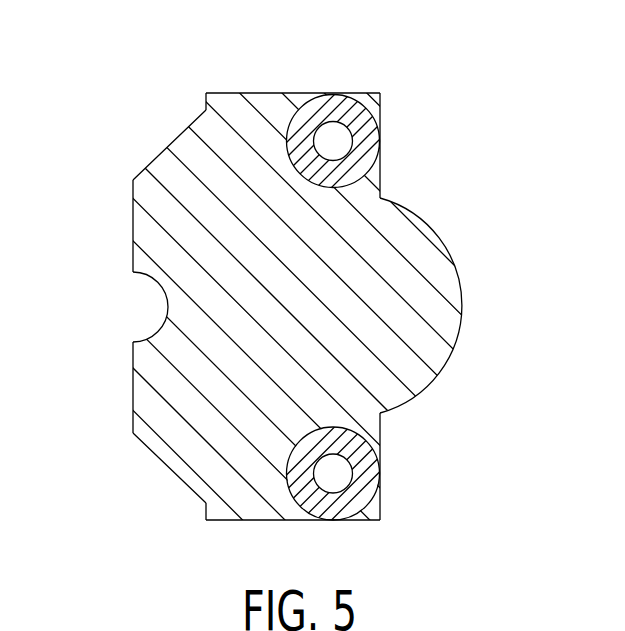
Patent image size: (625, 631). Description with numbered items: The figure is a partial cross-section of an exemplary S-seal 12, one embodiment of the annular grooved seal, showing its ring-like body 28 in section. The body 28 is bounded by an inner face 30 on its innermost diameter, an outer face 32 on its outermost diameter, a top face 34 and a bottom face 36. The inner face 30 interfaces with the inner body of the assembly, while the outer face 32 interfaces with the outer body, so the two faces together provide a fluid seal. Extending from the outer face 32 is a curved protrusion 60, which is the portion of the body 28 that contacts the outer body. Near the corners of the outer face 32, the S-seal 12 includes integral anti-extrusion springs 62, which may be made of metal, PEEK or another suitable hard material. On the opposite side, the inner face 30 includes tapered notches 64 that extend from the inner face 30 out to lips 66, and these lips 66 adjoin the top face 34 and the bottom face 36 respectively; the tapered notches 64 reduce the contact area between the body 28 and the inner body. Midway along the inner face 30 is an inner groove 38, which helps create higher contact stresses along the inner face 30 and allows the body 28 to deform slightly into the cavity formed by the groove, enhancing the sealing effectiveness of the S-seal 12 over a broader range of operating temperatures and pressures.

The S-seal 12 is at (413, 70).
The body 28 is at (172, 48).
The inner face 30 is at (133, 390).
The outer face 32 is at (380, 183).
The top face 34 is at (253, 93).
The bottom face 36 is at (267, 520).
The inner groove 38 is at (150, 311).
The curved protrusion 60 is at (450, 257).
The anti-extrusion springs 62 is at (367, 140).
The tapered notches 64 is at (170, 150).
The lips 66 is at (207, 103).